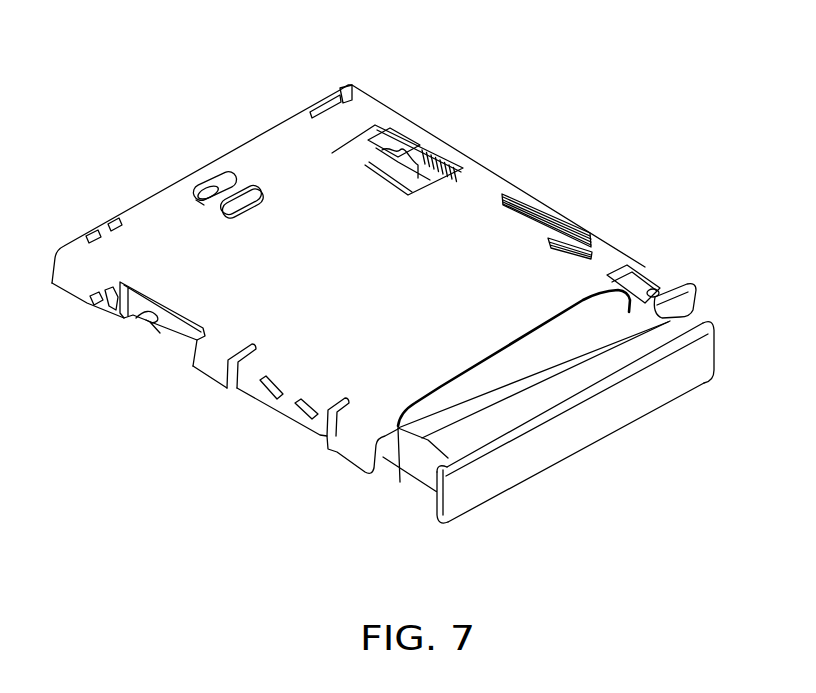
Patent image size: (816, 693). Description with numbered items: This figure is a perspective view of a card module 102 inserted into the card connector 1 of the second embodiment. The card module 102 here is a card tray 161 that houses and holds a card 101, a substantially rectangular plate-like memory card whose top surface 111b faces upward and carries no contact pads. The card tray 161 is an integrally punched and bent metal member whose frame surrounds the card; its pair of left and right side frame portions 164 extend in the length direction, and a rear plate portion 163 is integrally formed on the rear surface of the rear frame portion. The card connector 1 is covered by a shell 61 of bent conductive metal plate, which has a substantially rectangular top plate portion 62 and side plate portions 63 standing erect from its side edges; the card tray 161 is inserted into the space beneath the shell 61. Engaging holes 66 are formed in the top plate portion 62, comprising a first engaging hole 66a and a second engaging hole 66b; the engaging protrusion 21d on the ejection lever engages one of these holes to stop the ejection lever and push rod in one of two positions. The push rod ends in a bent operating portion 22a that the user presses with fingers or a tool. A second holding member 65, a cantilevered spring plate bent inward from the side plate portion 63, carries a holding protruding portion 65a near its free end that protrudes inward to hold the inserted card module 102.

The card connector 1 is at (447, 119).
The engaging protrusion 21d is at (200, 204).
The operating portion 22a is at (678, 288).
The shell 61 is at (367, 90).
The top plate portion 62 is at (471, 195).
The side plate portion 63 is at (282, 400).
The second holding member 65 is at (180, 340).
The holding protruding portion 65a is at (134, 328).
The engaging holes 66 is at (280, 58).
The first engaging hole 66a is at (260, 188).
The second engaging hole 66b is at (208, 172).
The card 101 is at (549, 345).
The card module 102 is at (726, 337).
The top surface 111b is at (440, 412).
The card tray 161 is at (694, 388).
The rear plate portion 163 is at (583, 428).
The side frame portions 164 is at (191, 351).